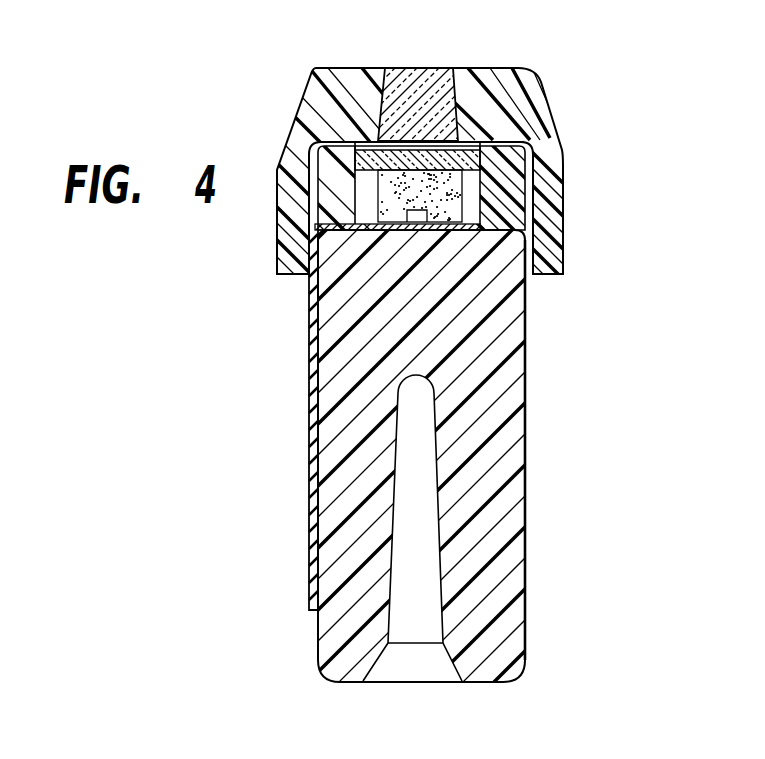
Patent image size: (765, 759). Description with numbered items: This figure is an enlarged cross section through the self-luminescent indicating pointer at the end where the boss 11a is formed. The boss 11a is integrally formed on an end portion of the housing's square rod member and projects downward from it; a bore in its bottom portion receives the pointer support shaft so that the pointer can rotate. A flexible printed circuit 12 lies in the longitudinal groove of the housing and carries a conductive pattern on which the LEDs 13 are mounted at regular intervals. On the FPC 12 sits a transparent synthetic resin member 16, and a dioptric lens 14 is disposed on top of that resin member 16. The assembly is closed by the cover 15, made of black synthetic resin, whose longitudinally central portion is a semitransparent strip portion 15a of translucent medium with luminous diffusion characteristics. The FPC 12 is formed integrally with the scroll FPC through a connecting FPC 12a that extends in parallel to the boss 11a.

The boss 11a is at (345, 444).
The flexible printed circuit 12 is at (470, 224).
The connecting FPC 12a is at (310, 317).
The LED 13 is at (452, 212).
The dioptric lens 14 is at (482, 163).
The cover 15 is at (550, 108).
The semitransparent strip portion 15a is at (407, 84).
The transparent synthetic resin member 16 is at (463, 185).